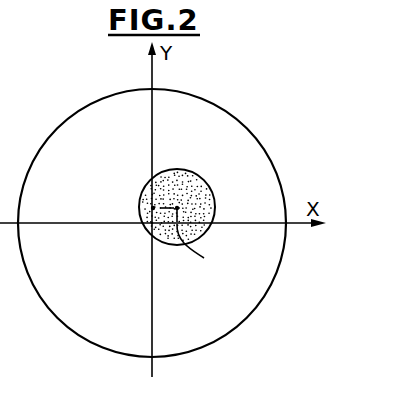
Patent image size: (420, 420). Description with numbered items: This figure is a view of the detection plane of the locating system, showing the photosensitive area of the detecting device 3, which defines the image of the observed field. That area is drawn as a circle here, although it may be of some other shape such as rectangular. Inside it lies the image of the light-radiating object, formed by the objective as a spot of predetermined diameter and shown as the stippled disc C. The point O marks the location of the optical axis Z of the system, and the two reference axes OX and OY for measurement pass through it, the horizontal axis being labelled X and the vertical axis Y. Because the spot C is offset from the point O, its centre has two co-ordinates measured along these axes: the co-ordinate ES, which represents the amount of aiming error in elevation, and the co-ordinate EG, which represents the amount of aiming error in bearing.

The detecting device 3 is at (265, 153).
The image of the object C is at (213, 192).
The elevation co-ordinate ES is at (153, 208).
The point O is at (147, 227).
The bearing co-ordinate EG is at (209, 248).